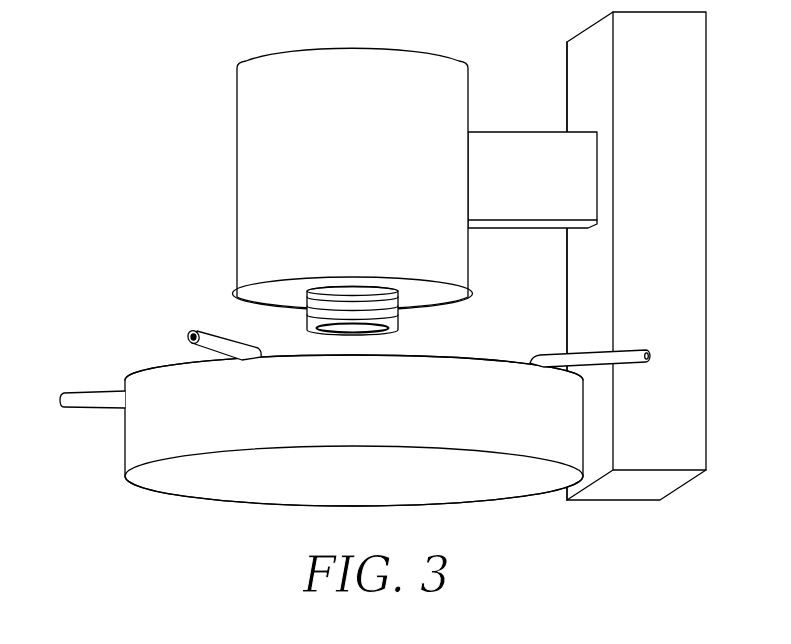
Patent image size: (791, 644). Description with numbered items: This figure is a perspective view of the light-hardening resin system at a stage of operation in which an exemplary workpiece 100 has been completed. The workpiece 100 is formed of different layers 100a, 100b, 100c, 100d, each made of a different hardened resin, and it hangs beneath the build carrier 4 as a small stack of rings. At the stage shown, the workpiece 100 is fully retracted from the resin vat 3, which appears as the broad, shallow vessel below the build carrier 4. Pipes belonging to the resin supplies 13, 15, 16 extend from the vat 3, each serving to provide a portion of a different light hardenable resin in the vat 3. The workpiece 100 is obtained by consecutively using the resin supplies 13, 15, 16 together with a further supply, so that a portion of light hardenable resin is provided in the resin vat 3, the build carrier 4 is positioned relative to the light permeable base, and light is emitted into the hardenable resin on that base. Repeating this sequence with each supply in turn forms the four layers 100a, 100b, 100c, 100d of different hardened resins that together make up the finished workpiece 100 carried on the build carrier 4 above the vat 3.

The resin vat 3 is at (125, 438).
The build carrier 4 is at (248, 298).
The resin supply 13 is at (82, 397).
The resin supply 15 is at (631, 349).
The resin supply 16 is at (208, 328).
The workpiece 100 is at (385, 294).
The layer 100a is at (401, 295).
The layer 100b is at (401, 305).
The layer 100c is at (401, 312).
The layer 100d is at (401, 323).